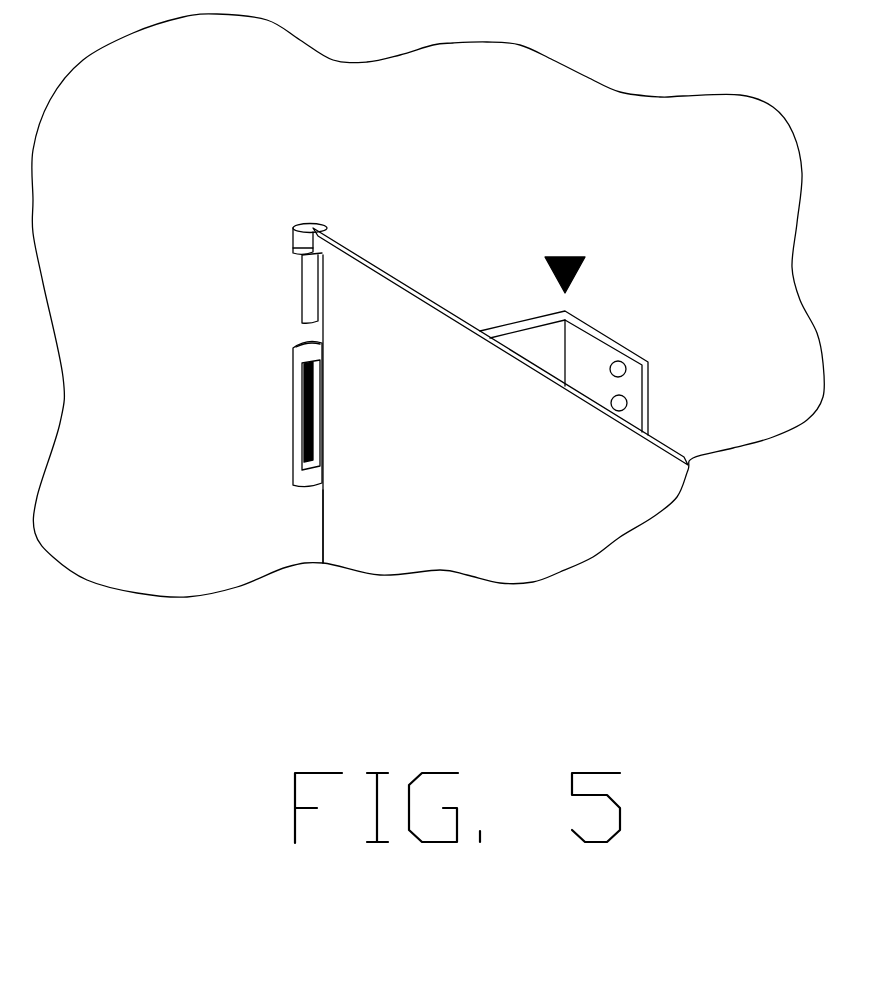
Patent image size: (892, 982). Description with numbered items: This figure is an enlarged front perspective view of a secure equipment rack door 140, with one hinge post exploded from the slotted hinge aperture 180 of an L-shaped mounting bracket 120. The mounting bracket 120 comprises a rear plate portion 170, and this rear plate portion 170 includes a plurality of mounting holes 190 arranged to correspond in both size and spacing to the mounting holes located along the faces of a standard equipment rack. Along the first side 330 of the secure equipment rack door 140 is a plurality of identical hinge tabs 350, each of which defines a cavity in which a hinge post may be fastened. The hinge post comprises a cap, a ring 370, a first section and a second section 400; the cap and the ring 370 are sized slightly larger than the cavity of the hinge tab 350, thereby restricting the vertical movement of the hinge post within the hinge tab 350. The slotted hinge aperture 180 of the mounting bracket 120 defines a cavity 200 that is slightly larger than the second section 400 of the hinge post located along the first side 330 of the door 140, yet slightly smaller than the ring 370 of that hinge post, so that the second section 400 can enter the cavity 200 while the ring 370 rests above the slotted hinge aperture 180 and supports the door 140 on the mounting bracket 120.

The mounting bracket 120 is at (565, 257).
The secure equipment rack door 140 is at (458, 420).
The rear plate portion 170 is at (590, 362).
The slotted hinge aperture 180 is at (297, 427).
The mounting holes 190 is at (615, 372).
The cavity 200 is at (310, 343).
The first side 330 is at (292, 535).
The hinge tab 350 is at (297, 244).
The ring 370 is at (298, 234).
The second section 400 is at (310, 287).